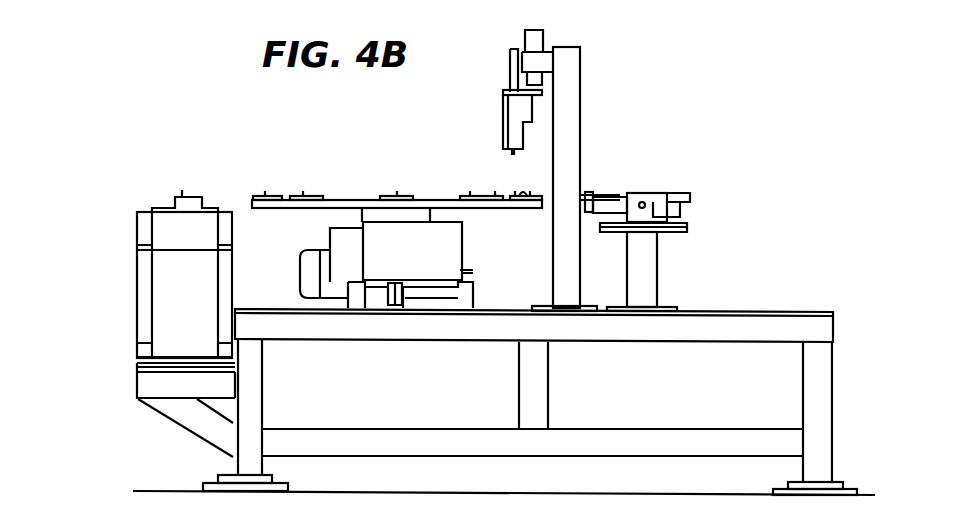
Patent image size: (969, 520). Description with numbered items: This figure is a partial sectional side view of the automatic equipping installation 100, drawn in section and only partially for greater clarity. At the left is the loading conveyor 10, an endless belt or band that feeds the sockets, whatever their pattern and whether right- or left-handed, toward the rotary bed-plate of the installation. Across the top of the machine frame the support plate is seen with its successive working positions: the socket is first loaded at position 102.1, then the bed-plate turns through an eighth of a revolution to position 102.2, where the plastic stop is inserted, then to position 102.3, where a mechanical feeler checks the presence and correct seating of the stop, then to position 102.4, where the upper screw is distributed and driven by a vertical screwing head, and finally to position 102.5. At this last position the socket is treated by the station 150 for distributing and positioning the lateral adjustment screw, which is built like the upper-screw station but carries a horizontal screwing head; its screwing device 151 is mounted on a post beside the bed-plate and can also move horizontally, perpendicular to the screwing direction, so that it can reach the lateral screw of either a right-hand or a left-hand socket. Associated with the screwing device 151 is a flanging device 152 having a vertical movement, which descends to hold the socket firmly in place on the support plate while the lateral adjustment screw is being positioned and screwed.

The automatic equipping installation 100 is at (200, 150).
The loading conveyor 10 is at (167, 196).
The position 102.1 of the support plate 102.1 is at (274, 192).
The position 102.2 of the support plate 102.2 is at (318, 192).
The position 102.3 of the support plate 102.3 is at (410, 193).
The position 102.4 of the support plate 102.4 is at (480, 193).
The position 102.5 of the support plate 102.5 is at (512, 208).
The station for distributing and positioning the lateral adjustment screw 150 is at (597, 112).
The screwing device 151 is at (605, 182).
The flanging device 152 is at (493, 105).